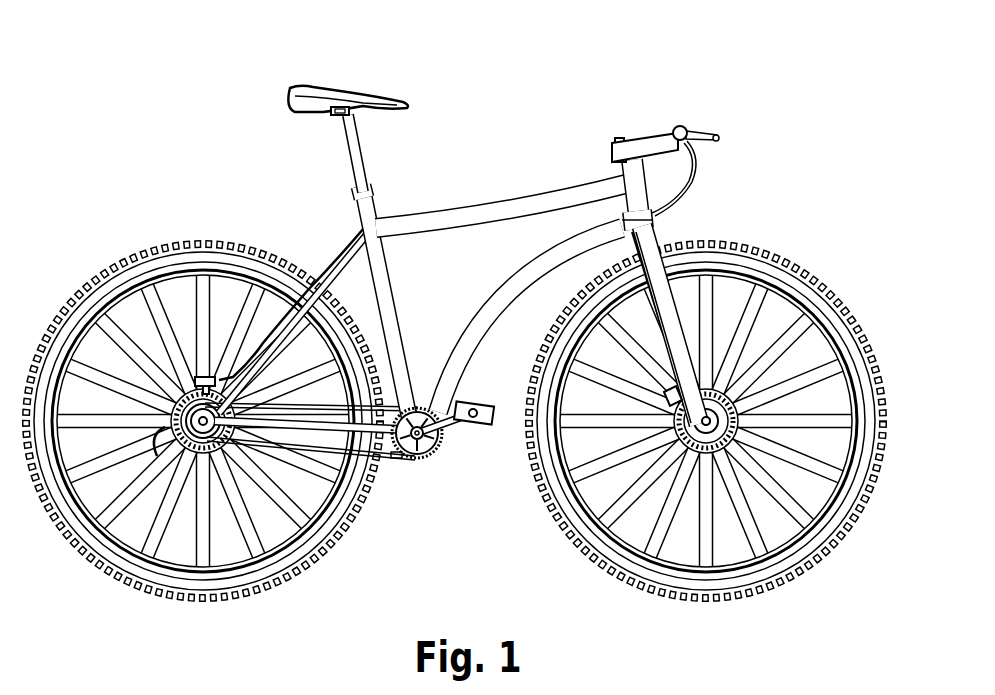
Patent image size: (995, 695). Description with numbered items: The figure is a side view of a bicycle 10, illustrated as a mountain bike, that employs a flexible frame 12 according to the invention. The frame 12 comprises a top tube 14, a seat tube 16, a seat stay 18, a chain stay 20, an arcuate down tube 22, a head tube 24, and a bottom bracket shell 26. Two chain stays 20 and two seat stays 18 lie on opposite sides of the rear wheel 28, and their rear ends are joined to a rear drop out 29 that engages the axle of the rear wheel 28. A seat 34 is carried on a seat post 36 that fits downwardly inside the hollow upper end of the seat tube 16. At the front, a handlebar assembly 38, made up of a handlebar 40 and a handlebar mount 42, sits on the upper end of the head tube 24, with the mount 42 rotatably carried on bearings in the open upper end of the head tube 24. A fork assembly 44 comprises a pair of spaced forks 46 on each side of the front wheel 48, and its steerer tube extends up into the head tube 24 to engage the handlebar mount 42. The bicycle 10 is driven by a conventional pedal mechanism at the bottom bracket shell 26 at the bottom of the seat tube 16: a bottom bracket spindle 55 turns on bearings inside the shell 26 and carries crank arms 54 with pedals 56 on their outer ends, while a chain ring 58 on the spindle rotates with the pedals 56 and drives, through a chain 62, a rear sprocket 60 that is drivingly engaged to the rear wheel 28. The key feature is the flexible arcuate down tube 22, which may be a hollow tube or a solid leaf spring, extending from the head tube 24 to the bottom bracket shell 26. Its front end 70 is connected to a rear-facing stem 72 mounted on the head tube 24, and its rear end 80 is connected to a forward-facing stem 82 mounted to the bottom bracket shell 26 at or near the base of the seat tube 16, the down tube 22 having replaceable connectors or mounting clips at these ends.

The bicycle 10 is at (454, 349).
The flexible frame 12 is at (514, 219).
The top tube 14 is at (518, 193).
The seat tube 16 is at (359, 213).
The seat stay 18 is at (280, 327).
The chain stay 20 is at (330, 453).
The down tube 22 is at (488, 298).
The head tube 24 is at (651, 206).
The bottom bracket shell 26 is at (374, 338).
The rear wheel 28 is at (273, 588).
The rear drop out 29 is at (206, 443).
The seat 34 is at (348, 92).
The seat post 36 is at (357, 133).
The handlebar assembly 38 is at (698, 98).
The handlebar 40 is at (688, 118).
The handlebar mount 42 is at (632, 142).
The fork assembly 44 is at (712, 324).
The fork 46 is at (670, 350).
The front wheel 48 is at (627, 584).
The crank arm 54 is at (447, 427).
The bottom bracket spindle 55 is at (428, 458).
The pedal 56 is at (488, 400).
The chain ring 58 is at (395, 458).
The rear sprocket 60 is at (155, 453).
The chain 62 is at (270, 447).
The front end 70 is at (618, 227).
The rear-facing stem 72 is at (652, 214).
The rear end 80 is at (427, 405).
The forward-facing stem 82 is at (450, 418).